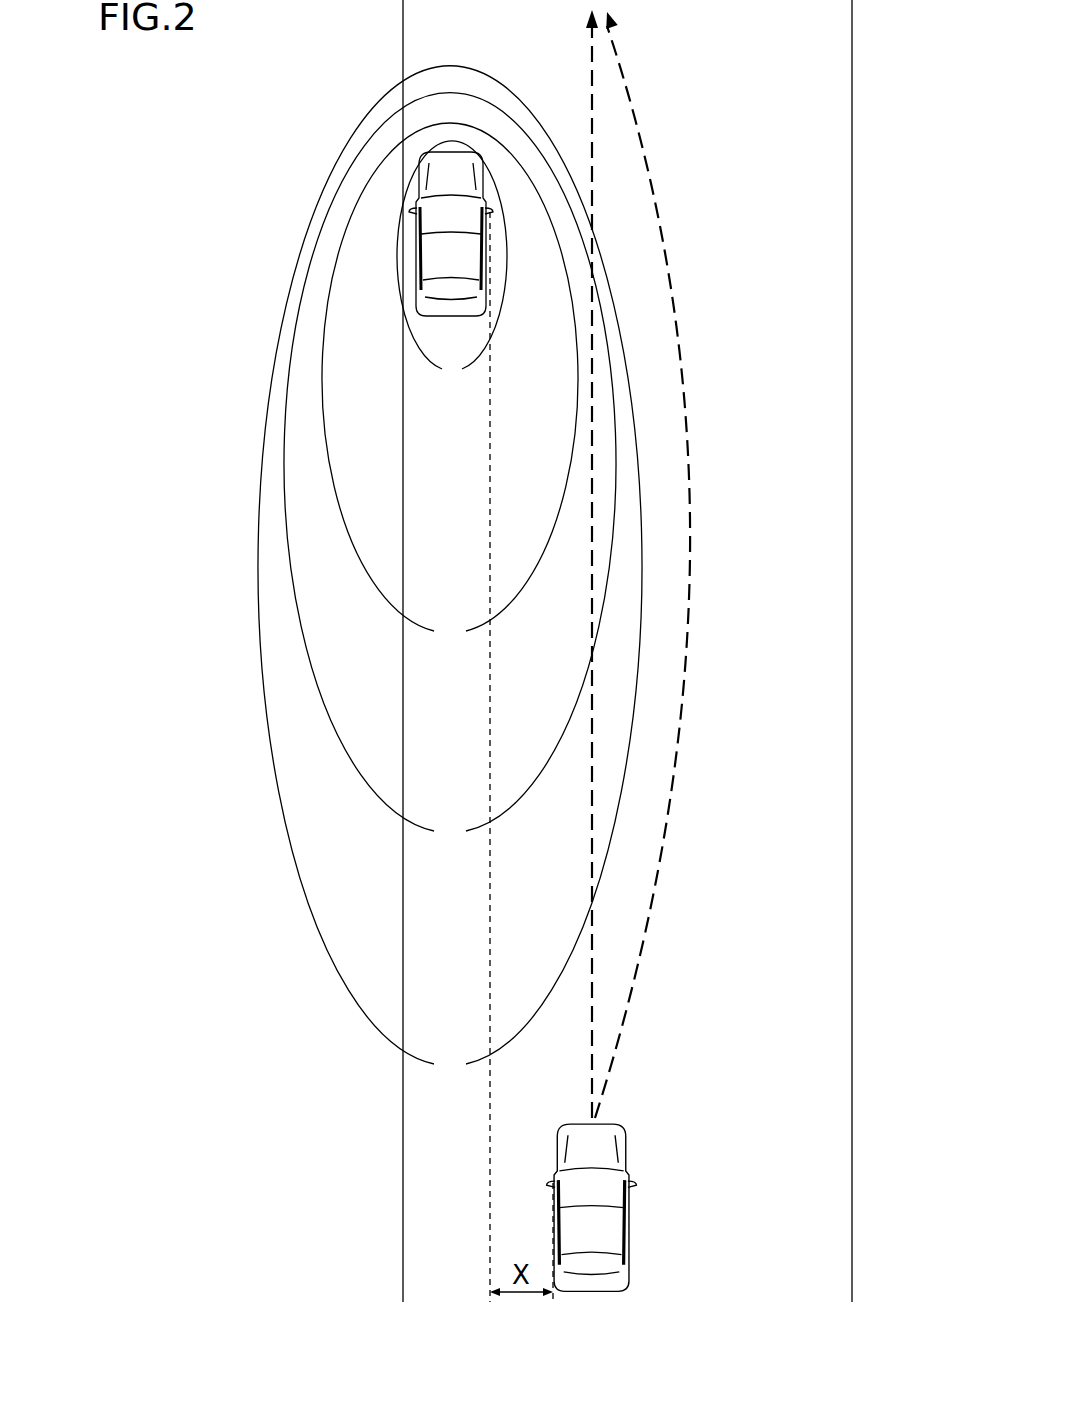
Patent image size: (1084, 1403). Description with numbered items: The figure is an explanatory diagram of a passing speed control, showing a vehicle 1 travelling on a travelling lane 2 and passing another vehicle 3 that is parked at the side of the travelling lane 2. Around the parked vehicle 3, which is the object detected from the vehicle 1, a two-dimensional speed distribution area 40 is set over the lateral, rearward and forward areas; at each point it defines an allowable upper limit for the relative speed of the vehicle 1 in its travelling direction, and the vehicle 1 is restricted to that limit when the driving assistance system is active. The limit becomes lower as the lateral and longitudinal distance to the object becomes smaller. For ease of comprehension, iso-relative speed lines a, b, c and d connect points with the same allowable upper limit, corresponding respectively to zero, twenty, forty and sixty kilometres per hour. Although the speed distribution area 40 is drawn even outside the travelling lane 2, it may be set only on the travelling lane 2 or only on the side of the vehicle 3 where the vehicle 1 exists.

The vehicle 1 is at (631, 1232).
The travelling lane 2 is at (826, 108).
The another vehicle 3 is at (418, 251).
The speed distribution area 40 is at (439, 574).
The iso-relative speed line a is at (405, 314).
The iso-relative speed line b is at (355, 548).
The iso-relative speed line c is at (306, 648).
The iso-relative speed line d is at (272, 752).